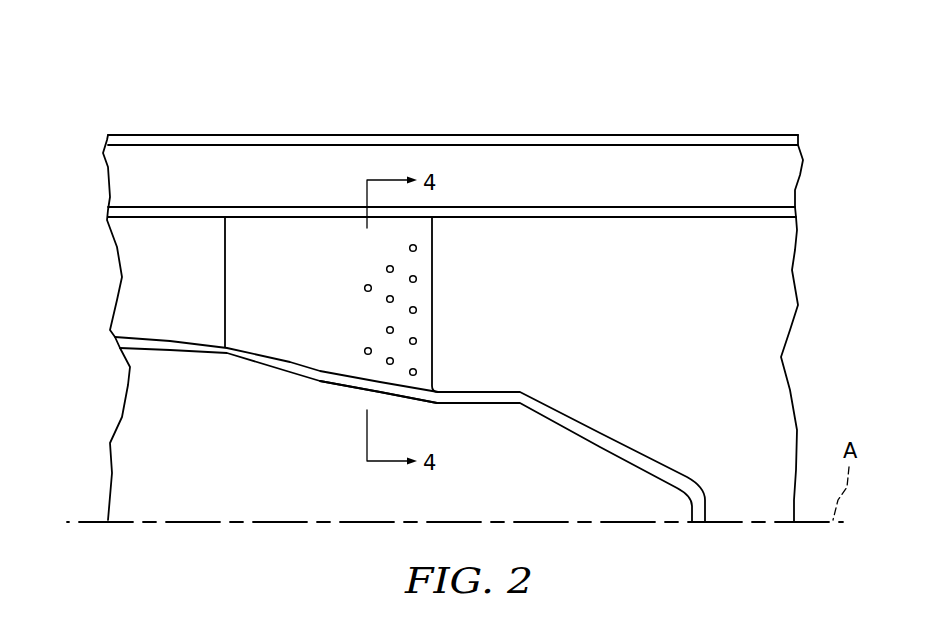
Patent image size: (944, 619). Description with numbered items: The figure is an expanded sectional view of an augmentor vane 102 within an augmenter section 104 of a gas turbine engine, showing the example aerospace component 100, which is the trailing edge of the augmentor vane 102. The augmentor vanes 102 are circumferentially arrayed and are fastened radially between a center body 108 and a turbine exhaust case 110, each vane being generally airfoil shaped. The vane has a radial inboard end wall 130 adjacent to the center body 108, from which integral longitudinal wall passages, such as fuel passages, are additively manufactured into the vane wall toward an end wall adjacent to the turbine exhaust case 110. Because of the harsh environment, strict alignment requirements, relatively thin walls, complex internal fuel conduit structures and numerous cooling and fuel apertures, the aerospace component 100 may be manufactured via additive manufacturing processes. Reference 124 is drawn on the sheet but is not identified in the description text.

The augmenter section 104 is at (403, 105).
The turbine exhaust case 110 is at (540, 135).
The mounting band 124 is at (298, 217).
The augmentor vane 102 is at (327, 301).
The center body 108 is at (297, 383).
The aerospace component 100 is at (465, 373).
The radial inboard end wall 130 is at (385, 393).